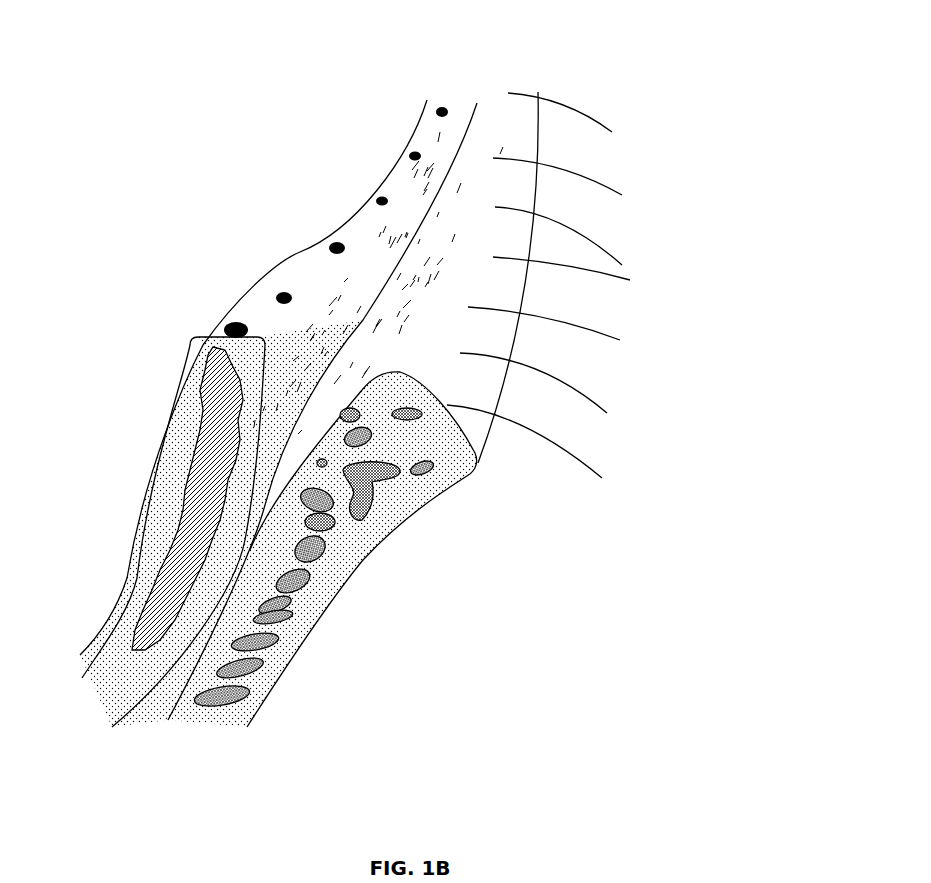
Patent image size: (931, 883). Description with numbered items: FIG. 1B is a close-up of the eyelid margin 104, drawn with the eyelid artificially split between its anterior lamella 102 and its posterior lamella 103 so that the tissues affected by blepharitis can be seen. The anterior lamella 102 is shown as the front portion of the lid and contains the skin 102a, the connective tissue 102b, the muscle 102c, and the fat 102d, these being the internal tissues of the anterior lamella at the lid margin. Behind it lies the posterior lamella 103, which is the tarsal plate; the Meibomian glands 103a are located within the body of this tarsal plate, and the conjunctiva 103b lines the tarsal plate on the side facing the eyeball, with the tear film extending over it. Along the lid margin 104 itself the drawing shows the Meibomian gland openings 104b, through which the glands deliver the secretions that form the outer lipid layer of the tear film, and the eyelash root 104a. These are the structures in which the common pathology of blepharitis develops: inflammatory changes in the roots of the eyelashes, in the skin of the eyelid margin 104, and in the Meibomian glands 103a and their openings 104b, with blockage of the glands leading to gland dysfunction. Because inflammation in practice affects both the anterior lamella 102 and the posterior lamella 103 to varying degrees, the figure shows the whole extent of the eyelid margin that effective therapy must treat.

The anterior lamella 102 is at (445, 476).
The skin 102a is at (410, 523).
The connective tissue 102b is at (293, 623).
The muscle 102c is at (307, 587).
The fat 102d is at (290, 533).
The posterior lamella 103 is at (200, 357).
The Meibomian glands 103a is at (192, 466).
The conjunctiva 103b is at (118, 578).
The eyelid margin 104 is at (413, 92).
The eyelash root 104a is at (413, 407).
The Meibomian gland opening 104b is at (222, 322).